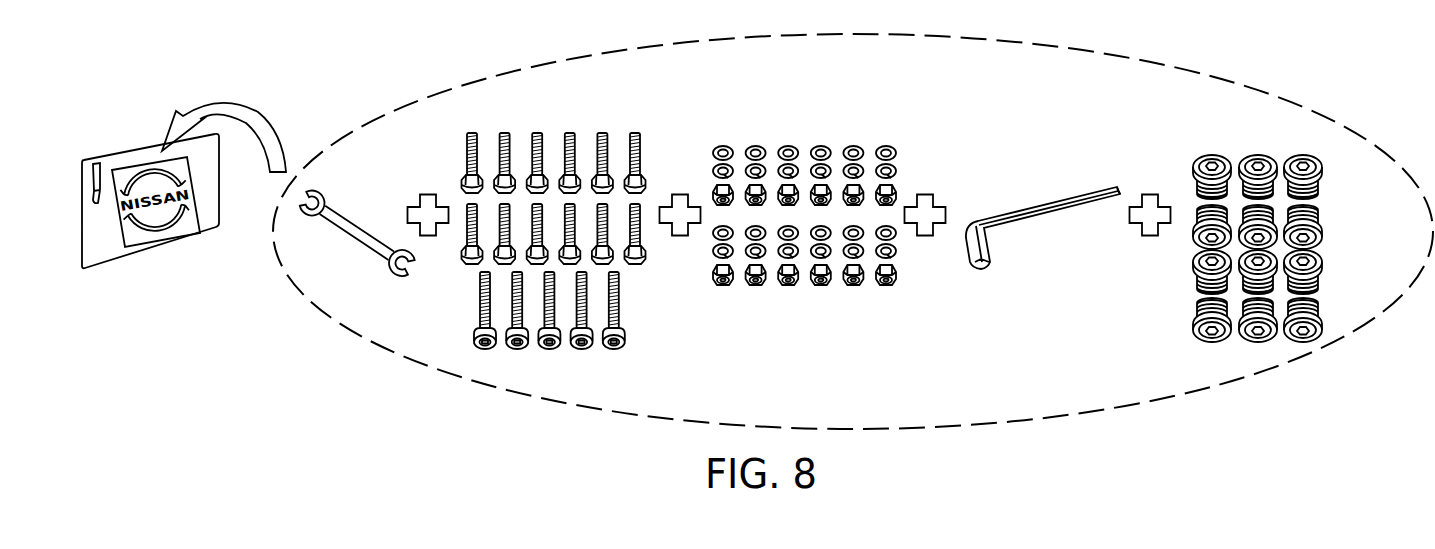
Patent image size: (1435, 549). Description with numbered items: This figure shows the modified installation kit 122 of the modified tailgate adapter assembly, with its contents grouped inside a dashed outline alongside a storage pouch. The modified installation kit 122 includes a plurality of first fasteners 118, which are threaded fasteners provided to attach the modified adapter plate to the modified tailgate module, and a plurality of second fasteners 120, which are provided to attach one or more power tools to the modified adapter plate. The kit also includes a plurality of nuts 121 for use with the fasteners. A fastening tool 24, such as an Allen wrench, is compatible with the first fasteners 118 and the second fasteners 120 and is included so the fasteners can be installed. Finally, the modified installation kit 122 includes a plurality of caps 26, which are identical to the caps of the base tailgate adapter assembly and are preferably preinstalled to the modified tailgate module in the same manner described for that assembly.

The modified installation kit 122 is at (1285, 76).
The second fasteners 120 is at (445, 132).
The first fasteners 118 is at (614, 352).
The nuts 121 is at (801, 130).
The fastening tool 24 is at (1061, 231).
The caps 26 is at (1333, 158).